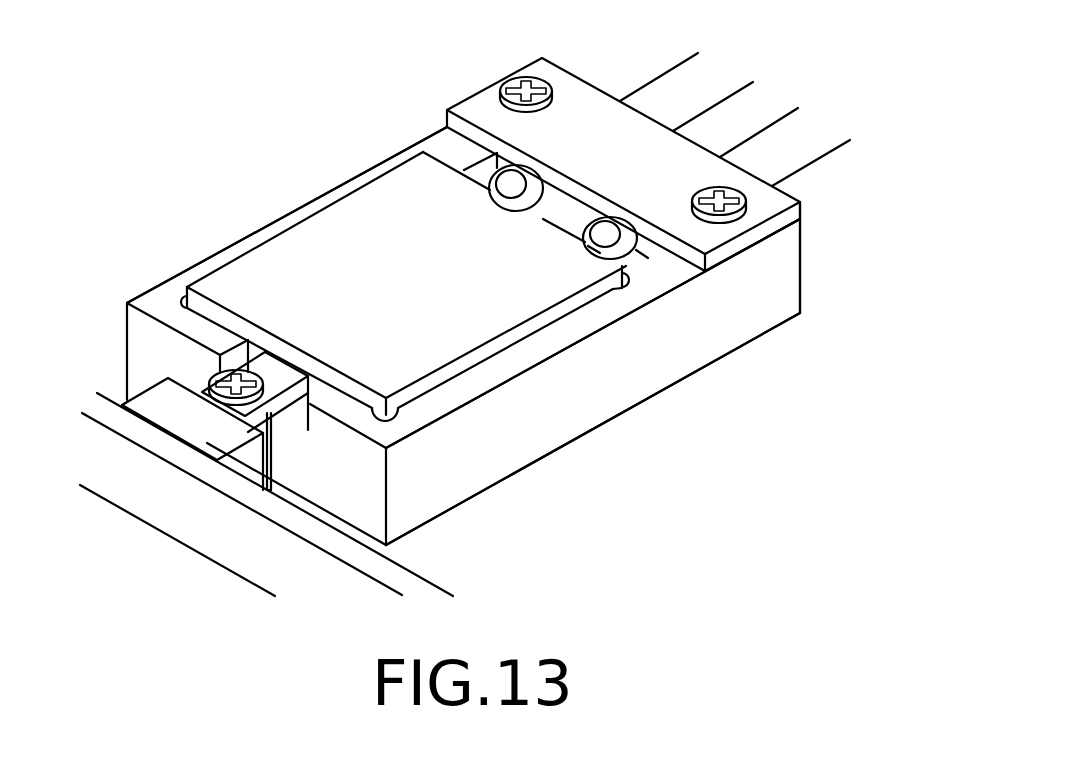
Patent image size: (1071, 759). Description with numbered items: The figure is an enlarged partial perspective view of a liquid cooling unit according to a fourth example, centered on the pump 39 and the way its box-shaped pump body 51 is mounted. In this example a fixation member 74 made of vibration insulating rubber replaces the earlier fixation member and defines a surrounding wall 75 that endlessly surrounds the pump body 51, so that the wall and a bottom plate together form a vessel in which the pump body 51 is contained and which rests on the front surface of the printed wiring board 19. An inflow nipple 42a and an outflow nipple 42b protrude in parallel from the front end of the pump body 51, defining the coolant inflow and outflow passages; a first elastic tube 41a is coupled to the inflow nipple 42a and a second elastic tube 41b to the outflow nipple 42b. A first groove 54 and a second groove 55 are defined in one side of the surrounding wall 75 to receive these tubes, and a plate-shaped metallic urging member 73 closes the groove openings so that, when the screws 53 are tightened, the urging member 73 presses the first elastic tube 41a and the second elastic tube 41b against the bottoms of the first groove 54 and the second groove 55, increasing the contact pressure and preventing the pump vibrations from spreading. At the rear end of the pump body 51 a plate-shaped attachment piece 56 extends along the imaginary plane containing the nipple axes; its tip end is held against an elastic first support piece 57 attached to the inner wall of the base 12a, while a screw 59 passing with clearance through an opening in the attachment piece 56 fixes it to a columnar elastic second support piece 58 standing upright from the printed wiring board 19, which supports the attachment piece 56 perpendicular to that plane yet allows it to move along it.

The printed wiring board 19 is at (594, 514).
The surrounding wall 75 is at (670, 370).
The fixation member 74 is at (253, 232).
The pump 39 is at (354, 195).
The pump body 51 is at (472, 362).
The urging member 73 is at (465, 106).
The screws 53 is at (517, 80).
The first elastic tube 41a is at (669, 78).
The second elastic tube 41b is at (783, 162).
The inflow nipple 42a is at (490, 177).
The outflow nipple 42b is at (583, 235).
The first groove 54 is at (533, 175).
The second groove 55 is at (646, 262).
The attachment piece 56 is at (297, 380).
The screw 59 is at (243, 365).
The second support piece 58 is at (272, 453).
The first support piece 57 is at (150, 395).
The base 12a is at (147, 498).